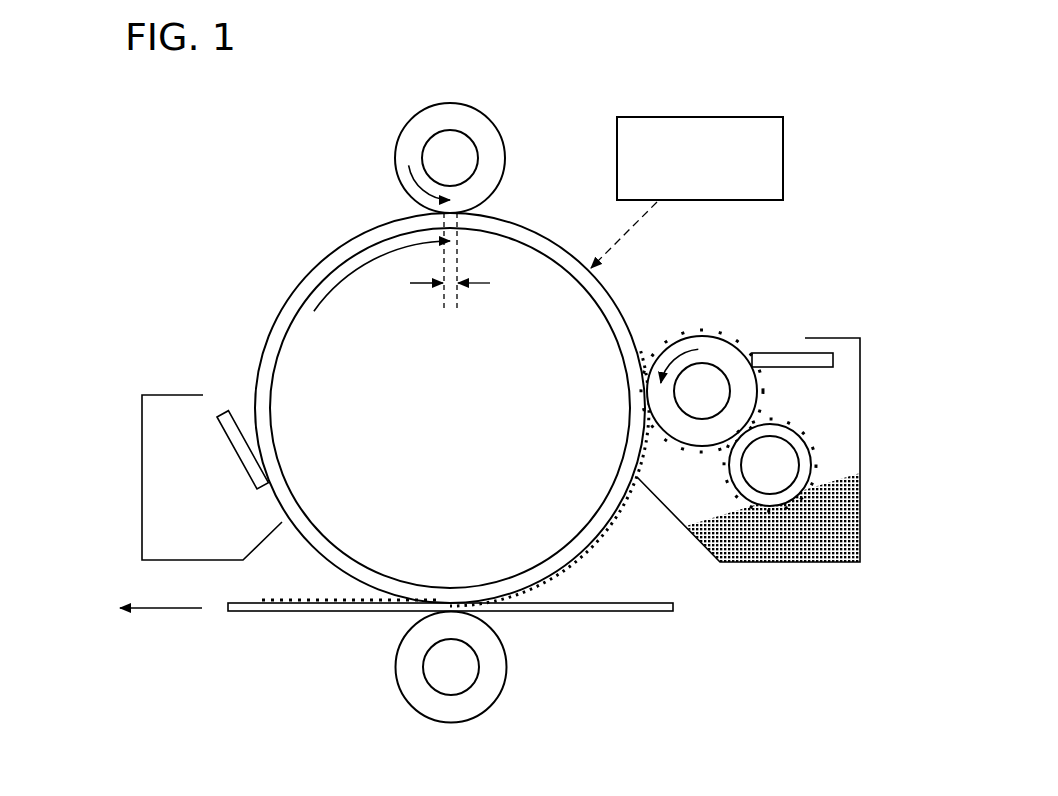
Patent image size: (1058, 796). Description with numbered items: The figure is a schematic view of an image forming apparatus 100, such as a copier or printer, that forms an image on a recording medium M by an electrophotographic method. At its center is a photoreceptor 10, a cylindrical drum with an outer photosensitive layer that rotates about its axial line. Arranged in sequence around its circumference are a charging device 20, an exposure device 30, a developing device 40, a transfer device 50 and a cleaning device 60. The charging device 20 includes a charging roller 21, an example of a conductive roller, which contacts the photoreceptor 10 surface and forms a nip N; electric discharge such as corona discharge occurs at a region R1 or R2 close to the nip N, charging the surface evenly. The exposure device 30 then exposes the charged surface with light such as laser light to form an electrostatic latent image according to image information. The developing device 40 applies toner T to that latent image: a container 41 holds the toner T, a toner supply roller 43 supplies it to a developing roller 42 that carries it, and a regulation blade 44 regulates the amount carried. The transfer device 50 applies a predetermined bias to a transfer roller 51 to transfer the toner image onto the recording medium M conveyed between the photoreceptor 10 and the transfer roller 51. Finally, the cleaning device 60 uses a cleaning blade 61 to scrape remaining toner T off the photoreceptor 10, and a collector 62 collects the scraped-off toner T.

The image forming apparatus 100 is at (130, 124).
The photoreceptor 10 is at (296, 287).
The charging device 20 is at (395, 128).
The charging roller 21 is at (499, 131).
The exposure device 30 is at (796, 122).
The developing device 40 is at (790, 448).
The container 41 is at (828, 563).
The developing roller 42 is at (690, 333).
The toner supply roller 43 is at (814, 441).
The regulation blade 44 is at (774, 352).
The transfer device 50 is at (505, 710).
The transfer roller 51 is at (400, 690).
The cleaning device 60 is at (174, 446).
The cleaning blade 61 is at (223, 411).
The collector 62 is at (143, 478).
The recording medium M is at (615, 613).
The nip N is at (470, 283).
The region R1 is at (406, 209).
The region R2 is at (491, 209).
The toner T is at (749, 540).